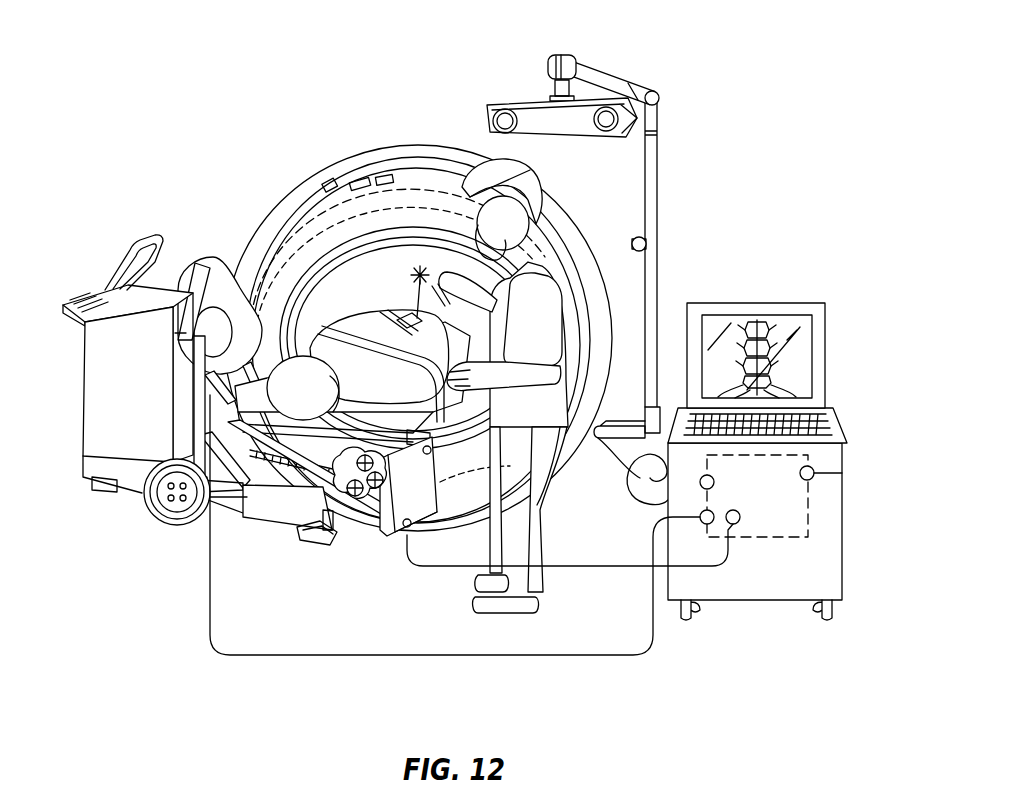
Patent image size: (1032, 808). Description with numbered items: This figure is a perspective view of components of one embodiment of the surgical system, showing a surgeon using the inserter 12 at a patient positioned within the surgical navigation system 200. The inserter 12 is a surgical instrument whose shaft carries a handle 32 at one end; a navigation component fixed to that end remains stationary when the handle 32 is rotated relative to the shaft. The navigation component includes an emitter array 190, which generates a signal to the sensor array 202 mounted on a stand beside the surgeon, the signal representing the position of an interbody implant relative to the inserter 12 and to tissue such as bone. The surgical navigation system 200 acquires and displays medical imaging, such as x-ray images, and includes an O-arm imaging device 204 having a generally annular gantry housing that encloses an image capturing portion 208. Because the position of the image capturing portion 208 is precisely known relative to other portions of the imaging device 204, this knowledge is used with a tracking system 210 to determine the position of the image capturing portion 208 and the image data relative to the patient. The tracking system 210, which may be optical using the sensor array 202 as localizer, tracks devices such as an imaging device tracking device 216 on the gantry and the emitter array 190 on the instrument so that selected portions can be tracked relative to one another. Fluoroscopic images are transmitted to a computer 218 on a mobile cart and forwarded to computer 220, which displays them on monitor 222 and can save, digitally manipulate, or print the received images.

The inserter 12 is at (470, 283).
The handle 32 is at (483, 313).
The emitter array 190 is at (416, 266).
The surgical navigation system 200 is at (210, 540).
The sensor array 202 is at (640, 72).
The imaging device 204 is at (392, 317).
The image capturing portion 208 is at (419, 195).
The tracking system 210 is at (423, 573).
The imaging device tracking device 216 is at (326, 186).
The computer 218 is at (83, 400).
The computer 220 is at (793, 430).
The monitor 222 is at (765, 300).